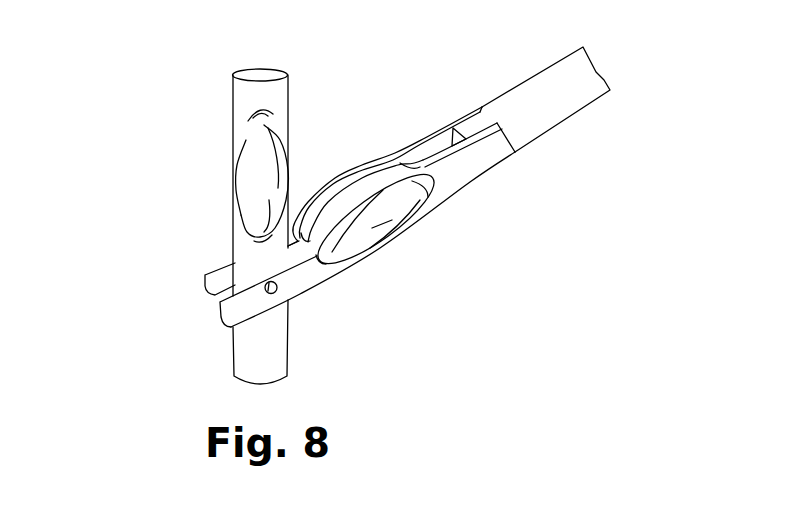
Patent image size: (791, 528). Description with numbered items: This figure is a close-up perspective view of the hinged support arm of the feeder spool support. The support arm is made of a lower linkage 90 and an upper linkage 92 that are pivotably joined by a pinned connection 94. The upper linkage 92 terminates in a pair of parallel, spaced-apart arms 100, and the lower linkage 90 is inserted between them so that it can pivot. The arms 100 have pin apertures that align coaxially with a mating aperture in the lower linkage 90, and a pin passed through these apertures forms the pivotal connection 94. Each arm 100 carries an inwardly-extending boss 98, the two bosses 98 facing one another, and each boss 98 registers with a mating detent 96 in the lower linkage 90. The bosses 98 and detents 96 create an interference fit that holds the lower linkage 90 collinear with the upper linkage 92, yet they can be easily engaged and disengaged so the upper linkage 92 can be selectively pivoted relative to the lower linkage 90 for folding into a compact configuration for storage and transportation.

The lower linkage 90 is at (255, 350).
The upper linkage 92 is at (472, 183).
The pinned connection 94 is at (257, 275).
The detents 96 is at (247, 177).
The boss 98 is at (373, 232).
The arms 100 is at (395, 330).